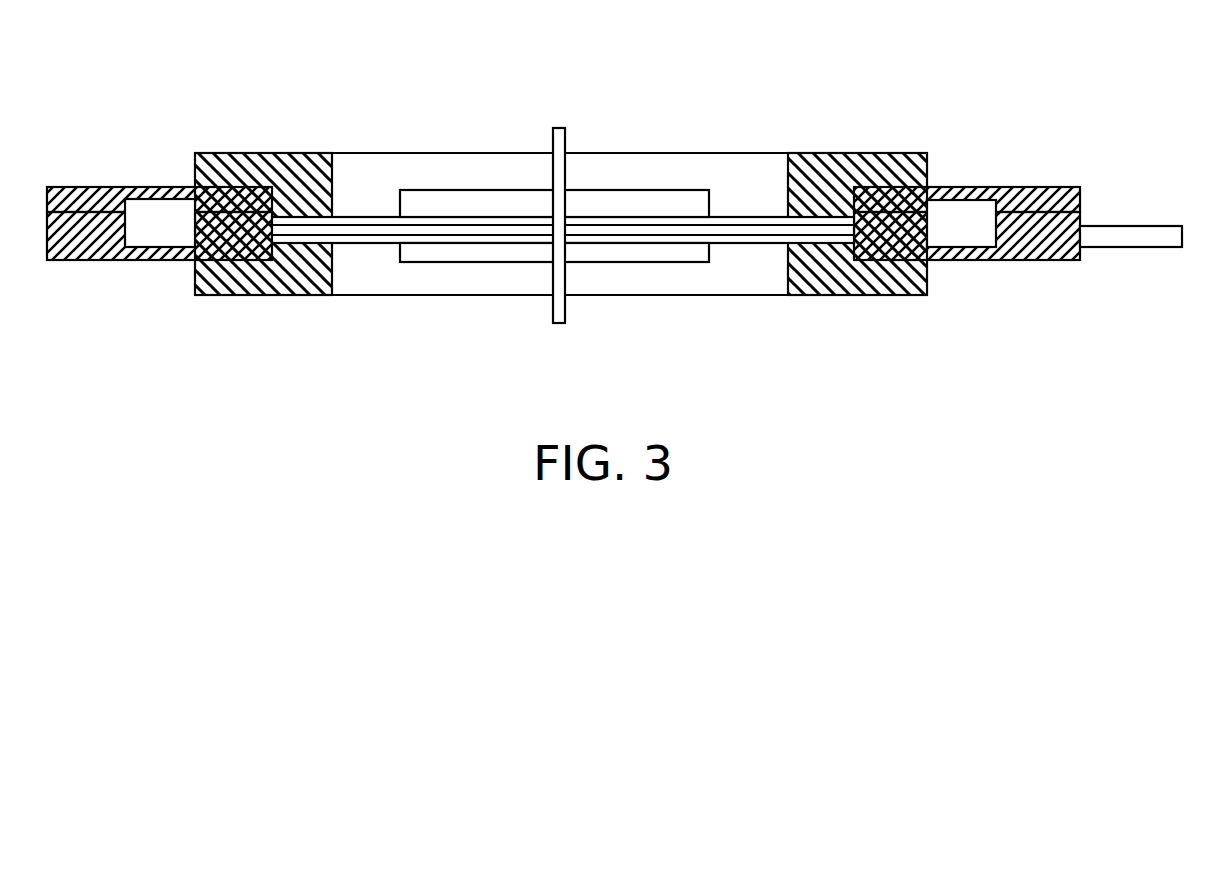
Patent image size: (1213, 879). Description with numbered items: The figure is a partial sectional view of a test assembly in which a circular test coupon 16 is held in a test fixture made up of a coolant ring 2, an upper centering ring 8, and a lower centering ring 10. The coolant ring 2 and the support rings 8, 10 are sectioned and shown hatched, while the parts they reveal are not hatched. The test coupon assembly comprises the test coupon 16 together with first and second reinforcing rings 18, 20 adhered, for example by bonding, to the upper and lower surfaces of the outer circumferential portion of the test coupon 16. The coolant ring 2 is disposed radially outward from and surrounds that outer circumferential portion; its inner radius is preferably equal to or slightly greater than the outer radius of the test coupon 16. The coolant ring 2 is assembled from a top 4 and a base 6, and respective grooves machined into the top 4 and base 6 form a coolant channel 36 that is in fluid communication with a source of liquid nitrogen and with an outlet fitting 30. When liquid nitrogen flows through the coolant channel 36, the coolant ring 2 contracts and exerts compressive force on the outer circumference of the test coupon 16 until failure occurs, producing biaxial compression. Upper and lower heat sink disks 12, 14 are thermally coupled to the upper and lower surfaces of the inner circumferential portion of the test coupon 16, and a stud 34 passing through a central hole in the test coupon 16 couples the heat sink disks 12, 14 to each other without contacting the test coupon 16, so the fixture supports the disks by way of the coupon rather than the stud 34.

The coolant ring 2 is at (1095, 186).
The top 4 is at (68, 187).
The base 6 is at (95, 260).
The upper centering ring 8 is at (694, 153).
The lower centering ring 10 is at (720, 295).
The upper heat sink disk 12 is at (480, 188).
The lower heat sink disk 14 is at (482, 260).
The test coupon 16 is at (657, 233).
The first reinforcing ring 18 is at (357, 215).
The second reinforcing ring 20 is at (335, 243).
The outlet fitting 30 is at (1130, 247).
The stud 34 is at (560, 128).
The coolant channel 36 is at (967, 227).